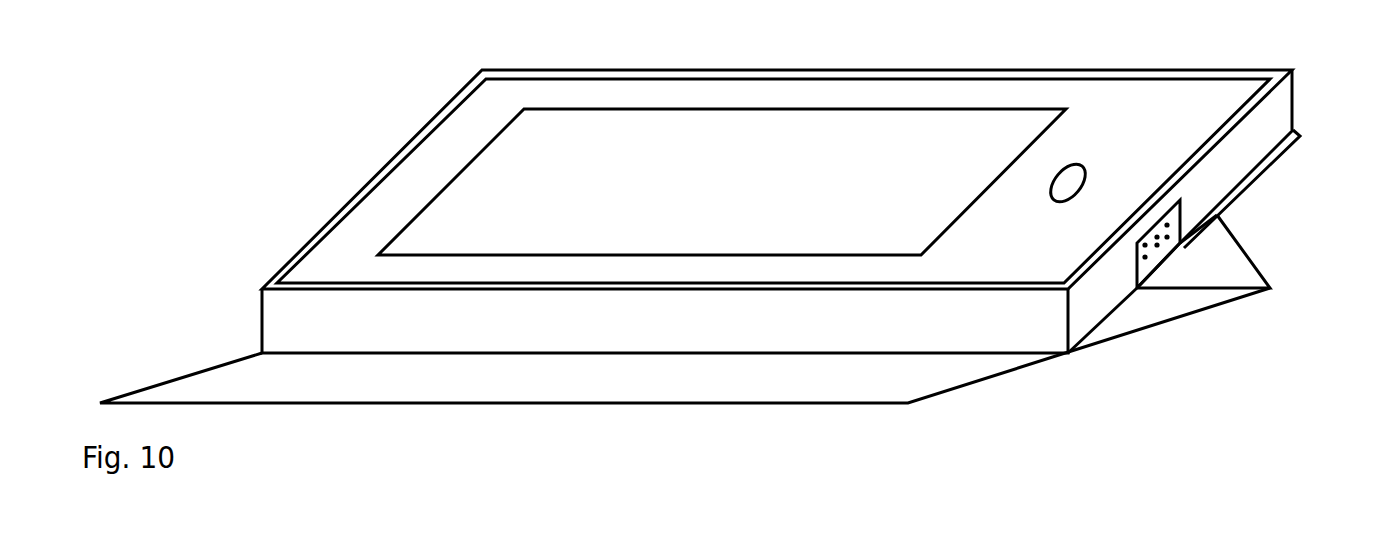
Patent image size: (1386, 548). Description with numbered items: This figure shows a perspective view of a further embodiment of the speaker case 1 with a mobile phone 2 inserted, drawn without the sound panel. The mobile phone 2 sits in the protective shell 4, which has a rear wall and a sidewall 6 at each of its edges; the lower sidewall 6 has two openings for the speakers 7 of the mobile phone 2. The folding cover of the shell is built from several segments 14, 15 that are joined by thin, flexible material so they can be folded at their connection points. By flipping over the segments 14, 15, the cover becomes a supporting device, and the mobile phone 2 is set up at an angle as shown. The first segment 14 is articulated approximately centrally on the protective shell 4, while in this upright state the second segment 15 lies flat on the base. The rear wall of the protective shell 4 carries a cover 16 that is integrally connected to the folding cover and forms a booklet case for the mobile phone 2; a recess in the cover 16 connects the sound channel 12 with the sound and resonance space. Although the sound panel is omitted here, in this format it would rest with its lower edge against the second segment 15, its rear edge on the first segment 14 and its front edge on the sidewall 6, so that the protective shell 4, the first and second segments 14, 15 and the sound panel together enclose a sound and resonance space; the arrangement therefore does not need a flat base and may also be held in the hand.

The speaker case 1 is at (350, 177).
The mobile phone 2 is at (645, 165).
The protective shell 4 is at (1104, 80).
The sidewall 6 is at (1278, 128).
The speakers 7 is at (1170, 225).
The sound channel 12 is at (1153, 277).
The first segment 14 is at (1243, 279).
The second segment 15 is at (1143, 322).
The cover 16 is at (1283, 157).